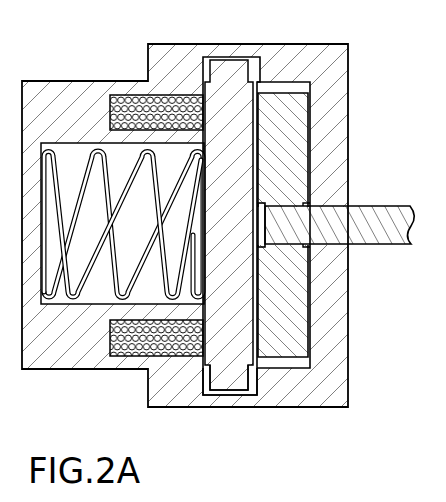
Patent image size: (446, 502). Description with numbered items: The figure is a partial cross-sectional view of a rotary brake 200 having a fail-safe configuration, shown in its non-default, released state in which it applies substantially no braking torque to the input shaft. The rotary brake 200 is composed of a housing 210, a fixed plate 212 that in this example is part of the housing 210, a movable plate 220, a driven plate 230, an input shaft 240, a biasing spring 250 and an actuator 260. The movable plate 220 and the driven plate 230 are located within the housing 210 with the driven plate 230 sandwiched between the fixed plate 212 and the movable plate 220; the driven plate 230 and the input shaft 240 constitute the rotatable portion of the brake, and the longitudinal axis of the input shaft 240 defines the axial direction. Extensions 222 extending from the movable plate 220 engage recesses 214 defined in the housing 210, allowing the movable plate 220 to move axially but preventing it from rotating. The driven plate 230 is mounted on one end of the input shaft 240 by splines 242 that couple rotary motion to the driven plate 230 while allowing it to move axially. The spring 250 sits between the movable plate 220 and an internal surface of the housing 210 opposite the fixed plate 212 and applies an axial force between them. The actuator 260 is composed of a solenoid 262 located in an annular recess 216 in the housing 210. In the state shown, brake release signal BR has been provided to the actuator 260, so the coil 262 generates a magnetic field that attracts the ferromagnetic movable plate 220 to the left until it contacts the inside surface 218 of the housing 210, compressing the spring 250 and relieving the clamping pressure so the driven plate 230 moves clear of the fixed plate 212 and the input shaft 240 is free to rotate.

The rotary brake 200 is at (316, 35).
The housing 210 is at (312, 62).
The fixed plate 212 is at (328, 157).
The recesses 214 is at (253, 68).
The annular recess 216 is at (138, 95).
The inside surface 218 is at (212, 375).
The movable plate 220 is at (232, 388).
The extensions 222 is at (222, 63).
The driven plate 230 is at (290, 337).
The input shaft 240 is at (363, 246).
The splines 242 is at (310, 203).
The biasing spring 250 is at (80, 298).
The actuator 260 is at (108, 98).
The solenoid 262 is at (172, 95).
The brake release signal BR is at (119, 357).